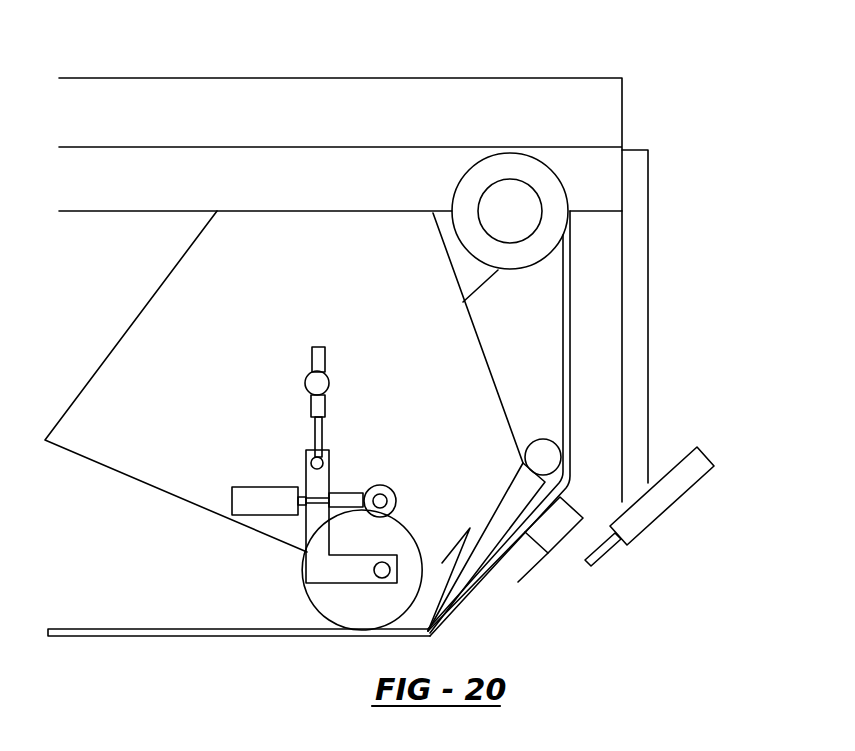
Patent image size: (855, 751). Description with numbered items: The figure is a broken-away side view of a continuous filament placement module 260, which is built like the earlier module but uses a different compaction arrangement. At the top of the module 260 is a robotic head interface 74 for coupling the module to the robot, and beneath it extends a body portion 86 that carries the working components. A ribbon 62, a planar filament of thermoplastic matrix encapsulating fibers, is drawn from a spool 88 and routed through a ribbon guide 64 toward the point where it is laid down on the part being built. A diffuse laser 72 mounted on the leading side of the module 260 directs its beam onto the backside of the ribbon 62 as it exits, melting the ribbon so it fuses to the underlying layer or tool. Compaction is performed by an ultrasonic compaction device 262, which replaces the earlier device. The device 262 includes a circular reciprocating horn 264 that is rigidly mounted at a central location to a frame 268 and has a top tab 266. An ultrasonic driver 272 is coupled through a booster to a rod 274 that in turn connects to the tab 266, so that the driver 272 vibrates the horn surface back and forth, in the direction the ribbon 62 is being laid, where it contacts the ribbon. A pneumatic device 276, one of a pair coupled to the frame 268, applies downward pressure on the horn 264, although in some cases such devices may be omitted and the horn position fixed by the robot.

The continuous filament placement module 260 is at (672, 72).
The robotic head interface 74 is at (146, 100).
The spool 88 is at (553, 200).
The ribbon 62 is at (572, 330).
The body portion 86 is at (135, 350).
The pneumatic device 276 is at (315, 405).
The rod 274 is at (348, 500).
The top tab 266 is at (393, 497).
The ultrasonic driver 272 is at (242, 498).
The frame 268 is at (315, 573).
The circular reciprocating horn 264 is at (367, 603).
The ribbon guide 64 is at (500, 513).
The diffuse laser 72 is at (665, 483).
The ultrasonic compaction device 262 is at (207, 563).